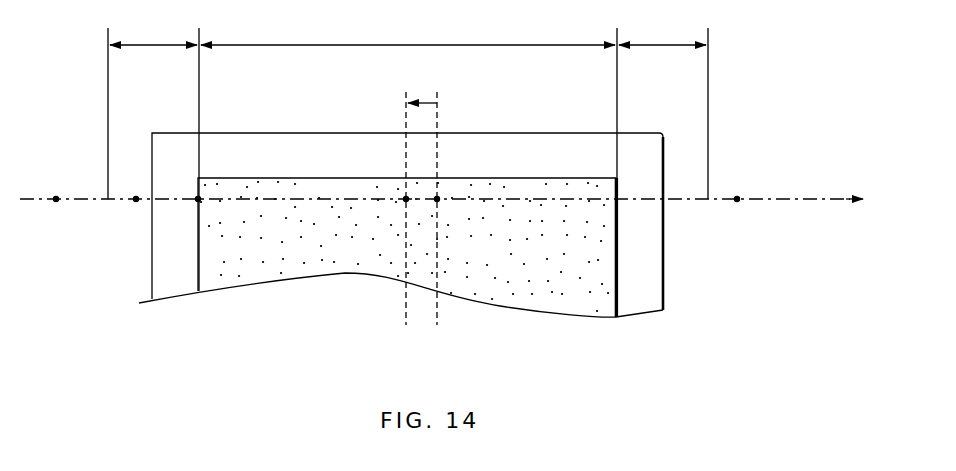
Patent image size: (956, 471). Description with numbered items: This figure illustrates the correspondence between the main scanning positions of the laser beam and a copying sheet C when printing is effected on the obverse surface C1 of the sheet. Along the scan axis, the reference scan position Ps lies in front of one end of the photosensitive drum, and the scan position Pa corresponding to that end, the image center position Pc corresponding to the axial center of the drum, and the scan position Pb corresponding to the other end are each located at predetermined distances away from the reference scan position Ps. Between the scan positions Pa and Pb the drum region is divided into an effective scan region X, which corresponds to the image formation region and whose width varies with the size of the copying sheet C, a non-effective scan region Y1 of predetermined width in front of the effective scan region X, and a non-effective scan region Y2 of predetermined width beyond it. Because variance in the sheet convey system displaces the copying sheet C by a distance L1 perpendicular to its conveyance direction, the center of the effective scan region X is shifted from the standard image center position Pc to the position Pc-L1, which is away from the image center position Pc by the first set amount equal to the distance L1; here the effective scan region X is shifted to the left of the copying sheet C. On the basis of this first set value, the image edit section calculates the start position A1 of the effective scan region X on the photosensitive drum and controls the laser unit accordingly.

The copying sheet C is at (538, 133).
The obverse surface C1 is at (630, 267).
The non-effective scan region Y1 is at (153, 31).
The effective scan region X is at (408, 31).
The non-effective scan region Y2 is at (662, 31).
The distance L1 is at (425, 103).
The reference scan position Ps is at (56, 196).
The scan position Pa is at (136, 196).
The start position A1 is at (198, 196).
The shifted image center position Pc-L1 is at (405, 197).
The image center position Pc is at (437, 198).
The scan position Pb is at (738, 198).